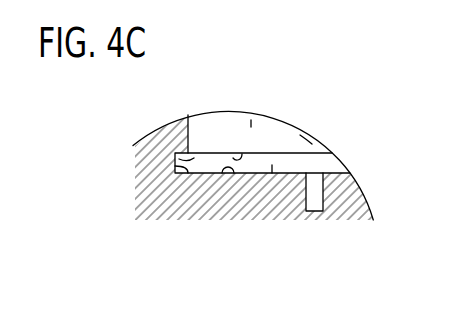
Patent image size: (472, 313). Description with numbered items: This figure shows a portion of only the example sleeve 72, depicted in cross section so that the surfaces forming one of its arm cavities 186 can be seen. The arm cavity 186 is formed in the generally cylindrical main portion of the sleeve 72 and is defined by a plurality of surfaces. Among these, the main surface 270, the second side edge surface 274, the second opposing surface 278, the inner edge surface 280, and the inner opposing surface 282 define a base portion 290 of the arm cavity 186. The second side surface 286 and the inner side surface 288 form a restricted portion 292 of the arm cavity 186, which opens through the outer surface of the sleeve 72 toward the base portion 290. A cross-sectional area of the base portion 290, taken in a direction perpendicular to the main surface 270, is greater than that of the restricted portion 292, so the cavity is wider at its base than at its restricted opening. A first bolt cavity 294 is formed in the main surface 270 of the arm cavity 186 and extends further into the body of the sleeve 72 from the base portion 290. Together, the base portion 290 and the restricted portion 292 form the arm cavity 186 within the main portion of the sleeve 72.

The sleeve 72 is at (161, 133).
The arm cavity 186 is at (293, 119).
The restricted portion 292 is at (312, 134).
The base portion 290 is at (339, 157).
The first bolt cavity 294 is at (319, 198).
The inner side surface 288 is at (189, 128).
The inner opposing surface 282 is at (194, 158).
The second opposing surface 278 is at (242, 154).
The second side surface 286 is at (250, 127).
The inner edge surface 280 is at (182, 175).
The main surface 270 is at (223, 177).
The second side edge surface 274 is at (272, 170).